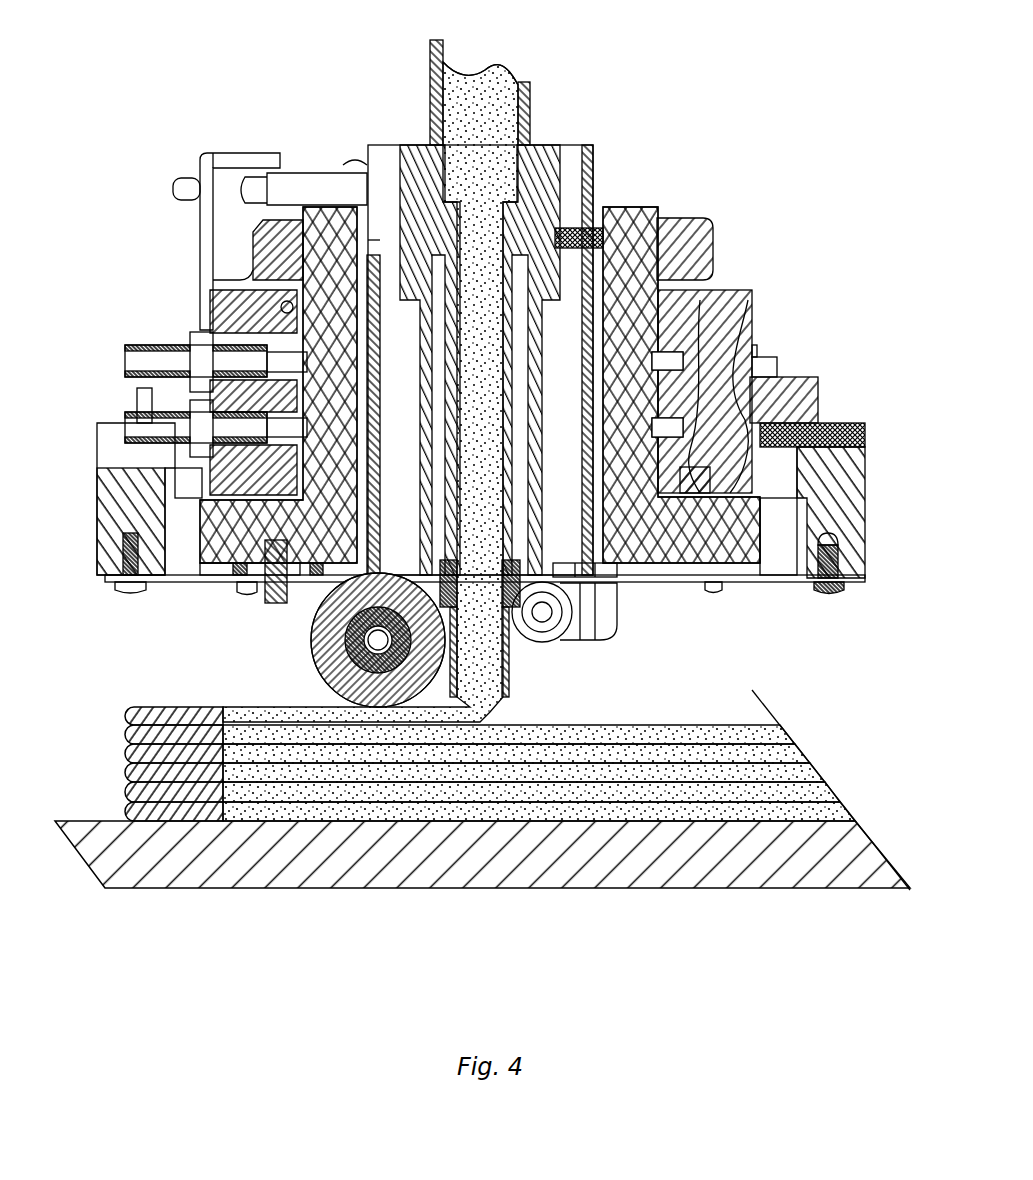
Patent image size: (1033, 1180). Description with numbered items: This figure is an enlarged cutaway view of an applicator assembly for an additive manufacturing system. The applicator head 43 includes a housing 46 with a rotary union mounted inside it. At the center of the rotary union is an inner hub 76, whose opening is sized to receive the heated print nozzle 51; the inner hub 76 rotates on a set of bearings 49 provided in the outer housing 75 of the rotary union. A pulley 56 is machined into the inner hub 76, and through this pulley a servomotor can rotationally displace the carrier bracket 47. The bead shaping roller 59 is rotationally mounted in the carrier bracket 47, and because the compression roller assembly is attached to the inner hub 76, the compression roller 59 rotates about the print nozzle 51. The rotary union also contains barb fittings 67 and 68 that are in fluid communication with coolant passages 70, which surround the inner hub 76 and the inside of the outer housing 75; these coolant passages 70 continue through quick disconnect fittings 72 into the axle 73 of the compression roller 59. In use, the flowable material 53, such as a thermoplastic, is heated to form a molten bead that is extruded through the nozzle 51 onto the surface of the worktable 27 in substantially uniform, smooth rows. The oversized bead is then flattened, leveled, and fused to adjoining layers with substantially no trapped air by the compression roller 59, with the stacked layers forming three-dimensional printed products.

The worktable 27 is at (615, 893).
The applicator head 43 is at (795, 244).
The housing 46 is at (865, 490).
The carrier bracket 47 is at (258, 597).
The bearings 49 is at (700, 305).
The nozzle 51 is at (415, 143).
The flowable material 53 is at (497, 62).
The pulley 56 is at (783, 540).
The bead shaping roller 59 is at (308, 650).
The barb fitting 67 is at (125, 435).
The barb fitting 68 is at (125, 362).
The coolant passages 70 is at (750, 318).
The quick disconnect fittings 72 is at (595, 637).
The axle 73 is at (312, 625).
The outer housing 75 is at (240, 287).
The inner hub 76 is at (624, 207).